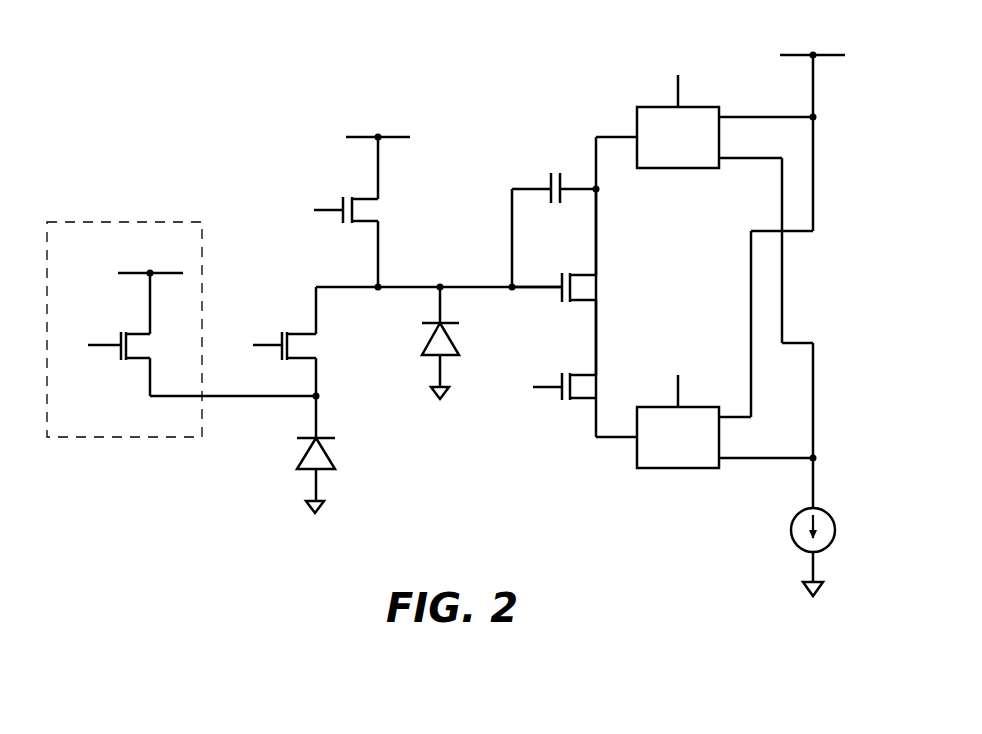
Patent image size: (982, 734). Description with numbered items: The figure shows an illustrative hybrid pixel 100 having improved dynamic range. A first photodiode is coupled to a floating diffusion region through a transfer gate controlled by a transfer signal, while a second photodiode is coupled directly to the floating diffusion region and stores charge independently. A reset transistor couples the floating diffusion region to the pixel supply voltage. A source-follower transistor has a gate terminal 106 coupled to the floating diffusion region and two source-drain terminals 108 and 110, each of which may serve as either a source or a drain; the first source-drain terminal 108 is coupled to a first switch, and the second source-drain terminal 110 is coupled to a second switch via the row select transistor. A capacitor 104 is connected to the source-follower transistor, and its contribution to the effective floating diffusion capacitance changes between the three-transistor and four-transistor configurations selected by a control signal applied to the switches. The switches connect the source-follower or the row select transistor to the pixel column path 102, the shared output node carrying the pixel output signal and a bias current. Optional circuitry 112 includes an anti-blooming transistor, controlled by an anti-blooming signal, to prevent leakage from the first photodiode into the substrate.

The pixel 100 is at (175, 63).
The pixel column path 102 is at (812, 482).
The capacitor 104 is at (548, 182).
The gate terminal 106 is at (548, 292).
The source-drain terminal 108 is at (598, 265).
The source-drain terminal 110 is at (598, 310).
The optional circuitry 112 is at (103, 226).